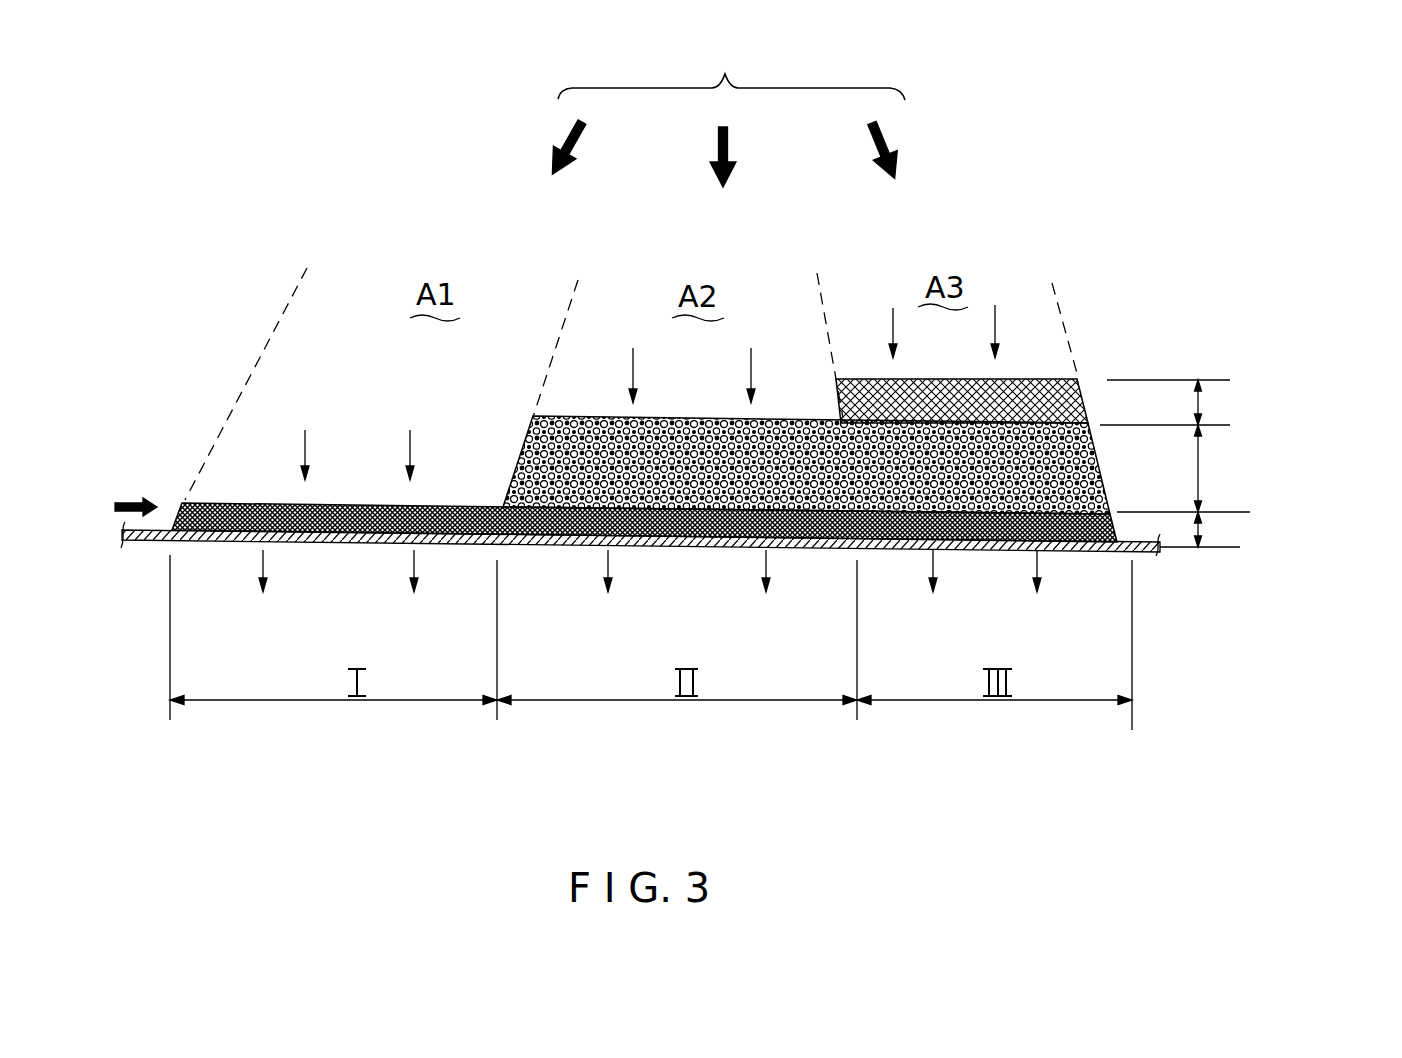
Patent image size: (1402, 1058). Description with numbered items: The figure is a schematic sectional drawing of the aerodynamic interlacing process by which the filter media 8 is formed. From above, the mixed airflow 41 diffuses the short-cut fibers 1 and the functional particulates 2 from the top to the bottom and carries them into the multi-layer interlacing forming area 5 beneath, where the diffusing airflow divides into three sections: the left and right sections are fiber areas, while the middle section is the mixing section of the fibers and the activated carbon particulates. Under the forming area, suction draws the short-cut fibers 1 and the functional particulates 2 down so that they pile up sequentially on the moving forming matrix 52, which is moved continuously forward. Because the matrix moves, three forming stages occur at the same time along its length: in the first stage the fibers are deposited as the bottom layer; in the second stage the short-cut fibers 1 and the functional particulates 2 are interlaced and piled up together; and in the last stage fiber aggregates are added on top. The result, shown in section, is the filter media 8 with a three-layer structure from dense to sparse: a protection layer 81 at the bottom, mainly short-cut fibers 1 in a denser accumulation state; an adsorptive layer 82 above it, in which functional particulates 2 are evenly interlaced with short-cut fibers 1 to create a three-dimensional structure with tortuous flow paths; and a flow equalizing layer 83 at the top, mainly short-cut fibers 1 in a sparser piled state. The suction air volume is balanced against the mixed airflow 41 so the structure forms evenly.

The short-cut fibers 1 is at (357, 503).
The functional particulates 2 is at (1018, 397).
The multi-layer interlacing forming area 5 is at (1168, 770).
The filter media 8 is at (1327, 358).
The mixed airflow 41 is at (724, 112).
The moving forming matrix 52 is at (323, 548).
The protection layer 81 is at (1205, 528).
The adsorptive layer 82 is at (1205, 470).
The flow equalizing layer 83 is at (1205, 405).